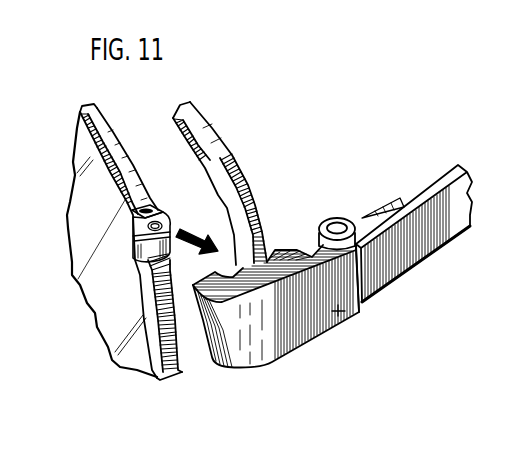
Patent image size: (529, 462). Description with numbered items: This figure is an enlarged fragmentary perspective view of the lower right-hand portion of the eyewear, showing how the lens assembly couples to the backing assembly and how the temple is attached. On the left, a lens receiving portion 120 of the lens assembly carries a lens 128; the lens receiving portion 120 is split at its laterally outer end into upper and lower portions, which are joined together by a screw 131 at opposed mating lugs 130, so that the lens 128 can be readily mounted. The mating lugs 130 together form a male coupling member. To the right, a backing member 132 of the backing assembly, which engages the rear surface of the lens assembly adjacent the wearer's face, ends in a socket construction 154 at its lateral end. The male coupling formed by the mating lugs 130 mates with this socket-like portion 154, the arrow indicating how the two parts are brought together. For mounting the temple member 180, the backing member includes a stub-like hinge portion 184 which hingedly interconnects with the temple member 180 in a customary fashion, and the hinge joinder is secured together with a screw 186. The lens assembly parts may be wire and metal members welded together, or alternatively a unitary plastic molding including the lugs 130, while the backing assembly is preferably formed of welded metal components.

The lens receiving portion 120 is at (103, 126).
The lens 128 is at (100, 313).
The mating lug 130 is at (140, 227).
The screw 131 is at (157, 208).
The backing member 132 is at (223, 149).
The socket construction 154 is at (252, 345).
The temple member 180 is at (458, 234).
The hinge portion 184 is at (359, 310).
The screw 186 is at (333, 220).